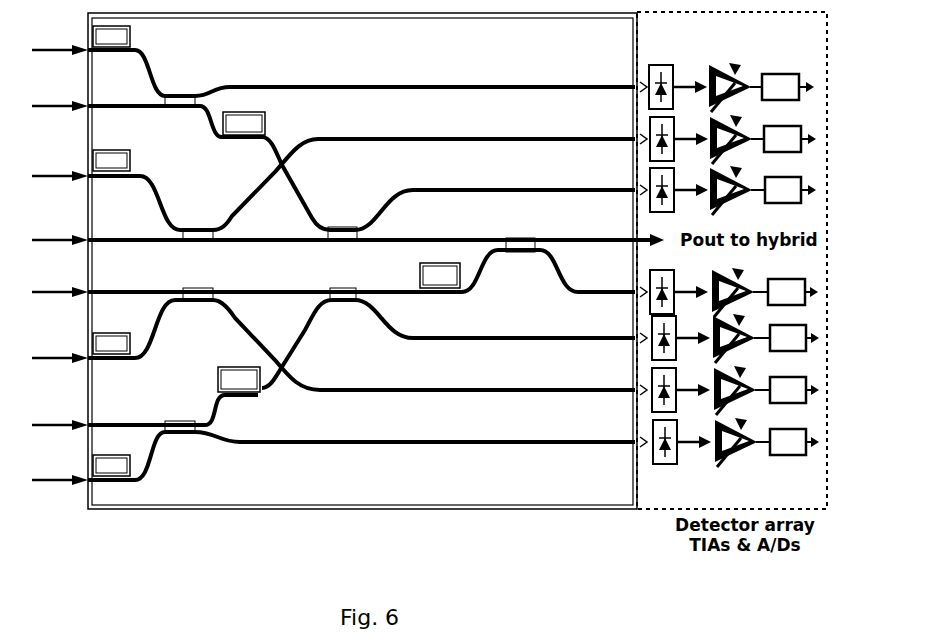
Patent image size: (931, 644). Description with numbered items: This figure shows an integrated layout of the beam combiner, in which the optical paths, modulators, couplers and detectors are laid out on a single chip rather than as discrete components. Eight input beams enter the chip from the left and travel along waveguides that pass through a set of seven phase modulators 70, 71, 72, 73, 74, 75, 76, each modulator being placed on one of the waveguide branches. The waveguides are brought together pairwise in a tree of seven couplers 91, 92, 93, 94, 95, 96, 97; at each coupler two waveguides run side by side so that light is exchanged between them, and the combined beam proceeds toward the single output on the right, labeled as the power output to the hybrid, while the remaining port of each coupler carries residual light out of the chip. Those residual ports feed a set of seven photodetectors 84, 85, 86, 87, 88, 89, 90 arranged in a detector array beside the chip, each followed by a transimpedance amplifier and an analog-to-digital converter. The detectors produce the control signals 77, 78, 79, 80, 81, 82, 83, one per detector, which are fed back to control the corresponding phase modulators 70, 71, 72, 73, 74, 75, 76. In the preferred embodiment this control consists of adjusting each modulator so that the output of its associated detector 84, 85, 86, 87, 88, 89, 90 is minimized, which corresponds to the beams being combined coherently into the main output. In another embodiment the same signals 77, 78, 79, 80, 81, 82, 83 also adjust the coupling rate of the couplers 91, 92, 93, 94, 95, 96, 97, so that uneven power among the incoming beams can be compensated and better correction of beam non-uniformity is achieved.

The phase modulator 70 is at (361, 61).
The phase modulator 71 is at (361, 184).
The phase modulator 72 is at (361, 345).
The phase modulator 73 is at (361, 455).
The phase modulator 74 is at (361, 168).
The phase modulator 75 is at (361, 362).
The phase modulator 76 is at (361, 267).
The control signal 77 is at (765, 87).
The control signal 78 is at (765, 139).
The control signal 79 is at (765, 190).
The control signal 80 is at (765, 292).
The control signal 81 is at (766, 338).
The control signal 82 is at (766, 390).
The control signal 83 is at (767, 442).
The photodetector 84 is at (666, 84).
The photodetector 85 is at (666, 136).
The photodetector 86 is at (666, 187).
The photodetector 87 is at (666, 289).
The photodetector 88 is at (666, 335).
The photodetector 89 is at (666, 387).
The photodetector 90 is at (666, 439).
The coupler 91 is at (187, 90).
The coupler 92 is at (204, 222).
The coupler 93 is at (204, 283).
The coupler 94 is at (185, 416).
The coupler 95 is at (351, 221).
The coupler 96 is at (352, 306).
The coupler 97 is at (539, 230).